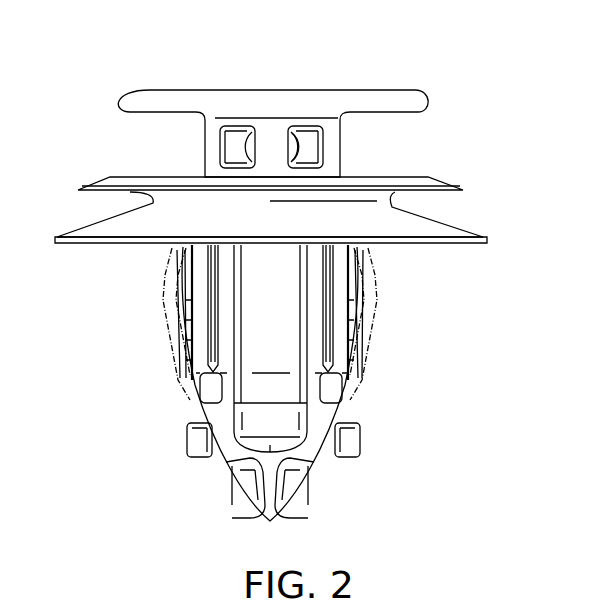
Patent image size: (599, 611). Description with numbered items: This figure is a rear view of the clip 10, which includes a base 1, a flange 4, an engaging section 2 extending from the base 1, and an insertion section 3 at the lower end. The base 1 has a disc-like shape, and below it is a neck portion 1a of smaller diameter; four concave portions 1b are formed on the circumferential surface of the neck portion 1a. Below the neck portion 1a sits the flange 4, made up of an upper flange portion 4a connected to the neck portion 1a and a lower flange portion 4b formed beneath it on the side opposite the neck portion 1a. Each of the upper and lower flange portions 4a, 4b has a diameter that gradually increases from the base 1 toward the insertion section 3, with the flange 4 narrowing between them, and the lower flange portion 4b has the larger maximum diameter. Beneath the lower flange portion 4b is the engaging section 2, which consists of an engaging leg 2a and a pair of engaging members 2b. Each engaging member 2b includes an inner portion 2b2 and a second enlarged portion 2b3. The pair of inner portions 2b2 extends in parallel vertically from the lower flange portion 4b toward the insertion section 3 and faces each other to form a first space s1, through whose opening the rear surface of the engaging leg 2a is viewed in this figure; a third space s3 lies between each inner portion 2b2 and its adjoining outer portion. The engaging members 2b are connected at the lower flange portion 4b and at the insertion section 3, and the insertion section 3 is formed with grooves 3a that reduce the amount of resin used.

The clip 10 is at (120, 90).
The base 1 is at (383, 103).
The neck portion 1a is at (330, 147).
The concave portions 1b is at (307, 153).
The flange 4 is at (513, 172).
The upper flange portion 4a is at (427, 183).
The lower flange portion 4b is at (467, 235).
The engaging section 2 is at (294, 383).
The engaging leg 2a is at (325, 383).
The first space s1 is at (272, 345).
The engaging members 2b is at (264, 329).
The inner portions 2b2 is at (200, 345).
The second enlarged portion 2b3 is at (172, 296).
The third space s3 is at (200, 322).
The insertion section 3 is at (270, 470).
The grooves 3a is at (228, 482).